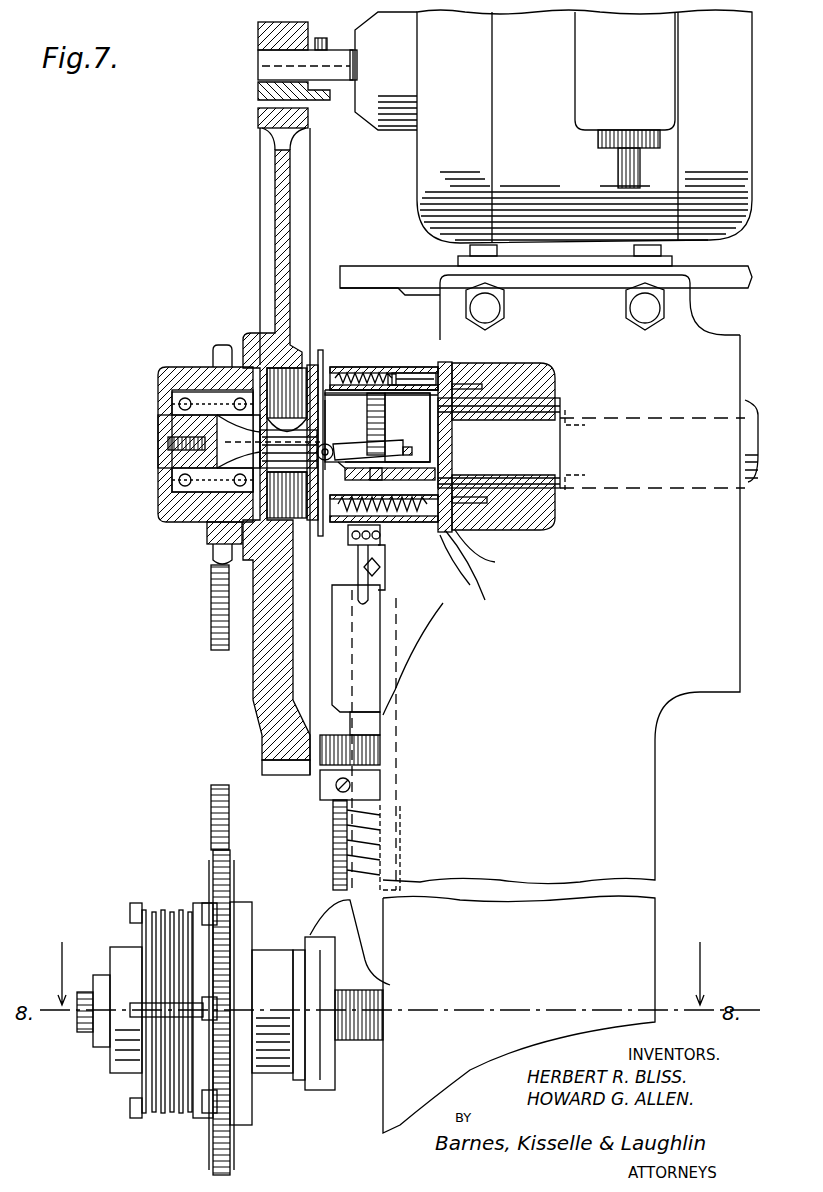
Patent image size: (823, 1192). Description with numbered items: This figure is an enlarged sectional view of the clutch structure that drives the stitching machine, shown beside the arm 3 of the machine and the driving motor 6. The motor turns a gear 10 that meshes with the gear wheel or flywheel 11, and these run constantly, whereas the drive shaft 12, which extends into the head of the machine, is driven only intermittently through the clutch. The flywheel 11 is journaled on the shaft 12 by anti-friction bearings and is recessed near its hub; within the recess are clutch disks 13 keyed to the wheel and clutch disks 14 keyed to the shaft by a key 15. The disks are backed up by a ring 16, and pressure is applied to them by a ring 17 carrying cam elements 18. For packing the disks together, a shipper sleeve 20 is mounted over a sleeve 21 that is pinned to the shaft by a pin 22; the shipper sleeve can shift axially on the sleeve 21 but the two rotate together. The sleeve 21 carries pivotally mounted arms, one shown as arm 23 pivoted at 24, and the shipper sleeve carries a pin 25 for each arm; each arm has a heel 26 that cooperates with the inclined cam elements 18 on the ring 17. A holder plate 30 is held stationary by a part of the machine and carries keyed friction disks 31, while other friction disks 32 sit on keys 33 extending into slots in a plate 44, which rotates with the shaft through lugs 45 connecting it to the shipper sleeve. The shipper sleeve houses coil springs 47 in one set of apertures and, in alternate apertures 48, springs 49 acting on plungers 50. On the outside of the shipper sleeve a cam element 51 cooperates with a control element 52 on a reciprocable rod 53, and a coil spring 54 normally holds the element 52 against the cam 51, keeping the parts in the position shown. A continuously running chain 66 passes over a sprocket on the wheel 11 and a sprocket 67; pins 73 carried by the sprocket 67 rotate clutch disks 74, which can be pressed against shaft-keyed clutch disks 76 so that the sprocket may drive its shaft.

The arm 3 is at (708, 690).
The driving motor 6 is at (430, 176).
The gear 10 is at (258, 36).
The flywheel 11 is at (275, 195).
The drive shaft 12 is at (745, 400).
The clutch disks 13 is at (280, 368).
The clutch disks 14 is at (310, 368).
The key 15 is at (240, 470).
The ring 16 is at (255, 367).
The ring 17 is at (322, 520).
The cam elements 18 is at (362, 372).
The shipper sleeve 20 is at (338, 393).
The sleeve 21 is at (465, 468).
The pin 22 is at (430, 460).
The arm 23 is at (390, 440).
The pivot 24 is at (342, 444).
The pin 25 is at (410, 462).
The heel 26 is at (340, 378).
The holder plate 30 is at (480, 540).
The friction disks 31 is at (470, 520).
The friction disks 32 is at (445, 362).
The keys 33 is at (500, 370).
The plate 44 is at (465, 545).
The lugs 45 is at (462, 590).
The coil spring 47 is at (345, 560).
The apertures 48 is at (405, 374).
The spring 49 is at (392, 374).
The plunger 50 is at (420, 374).
The cam element 51 is at (460, 560).
The control element 52 is at (363, 595).
The reciprocable rod 53 is at (372, 580).
The coil spring 54 is at (385, 860).
The chain 66 is at (211, 615).
The sprocket 67 is at (215, 872).
The pins 73 is at (135, 910).
The clutch disks 74 is at (143, 932).
The clutch disks 76 is at (150, 970).